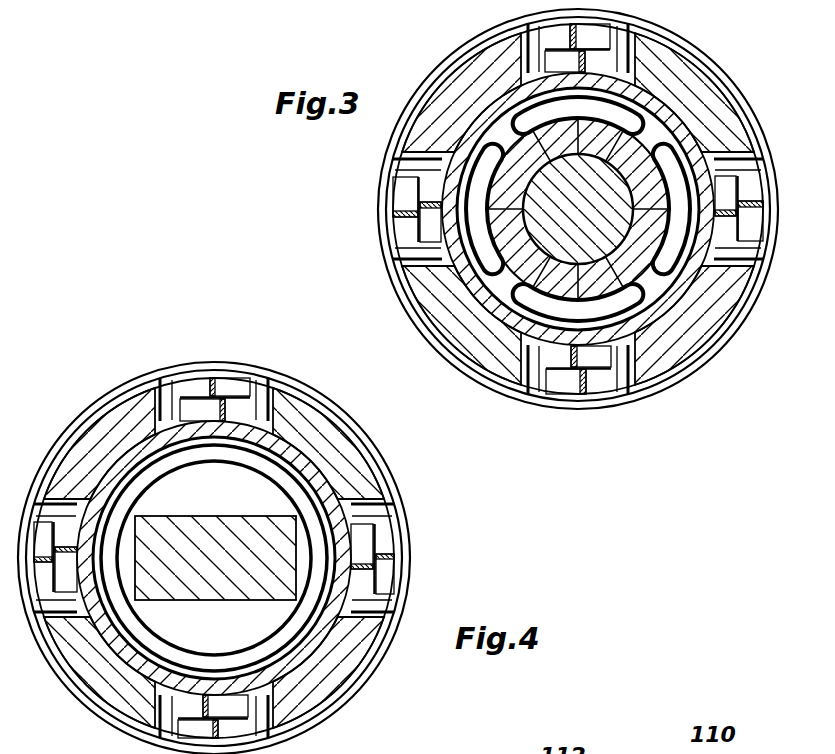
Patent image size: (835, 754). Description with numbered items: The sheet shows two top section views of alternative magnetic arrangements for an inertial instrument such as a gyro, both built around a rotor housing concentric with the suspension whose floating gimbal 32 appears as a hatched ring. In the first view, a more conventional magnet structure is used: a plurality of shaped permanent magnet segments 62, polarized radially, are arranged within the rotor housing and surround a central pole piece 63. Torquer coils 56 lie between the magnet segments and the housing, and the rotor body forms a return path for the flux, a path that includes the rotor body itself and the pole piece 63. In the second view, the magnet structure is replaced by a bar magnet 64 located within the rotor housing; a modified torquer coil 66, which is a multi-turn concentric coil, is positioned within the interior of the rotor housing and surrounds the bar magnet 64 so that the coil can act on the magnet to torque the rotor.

In FIG. 3, the floating gimbal 32 is at (670, 113).
In FIG. 3, the torquer coils 56 is at (513, 118).
In FIG. 3, the shaped permanent magnet segments 62 is at (497, 200).
In FIG. 3, the pole piece 63 is at (597, 204).
In FIG. 4, the bar magnet 64 is at (268, 530).
In FIG. 4, the modified torquer coil 66 is at (285, 640).